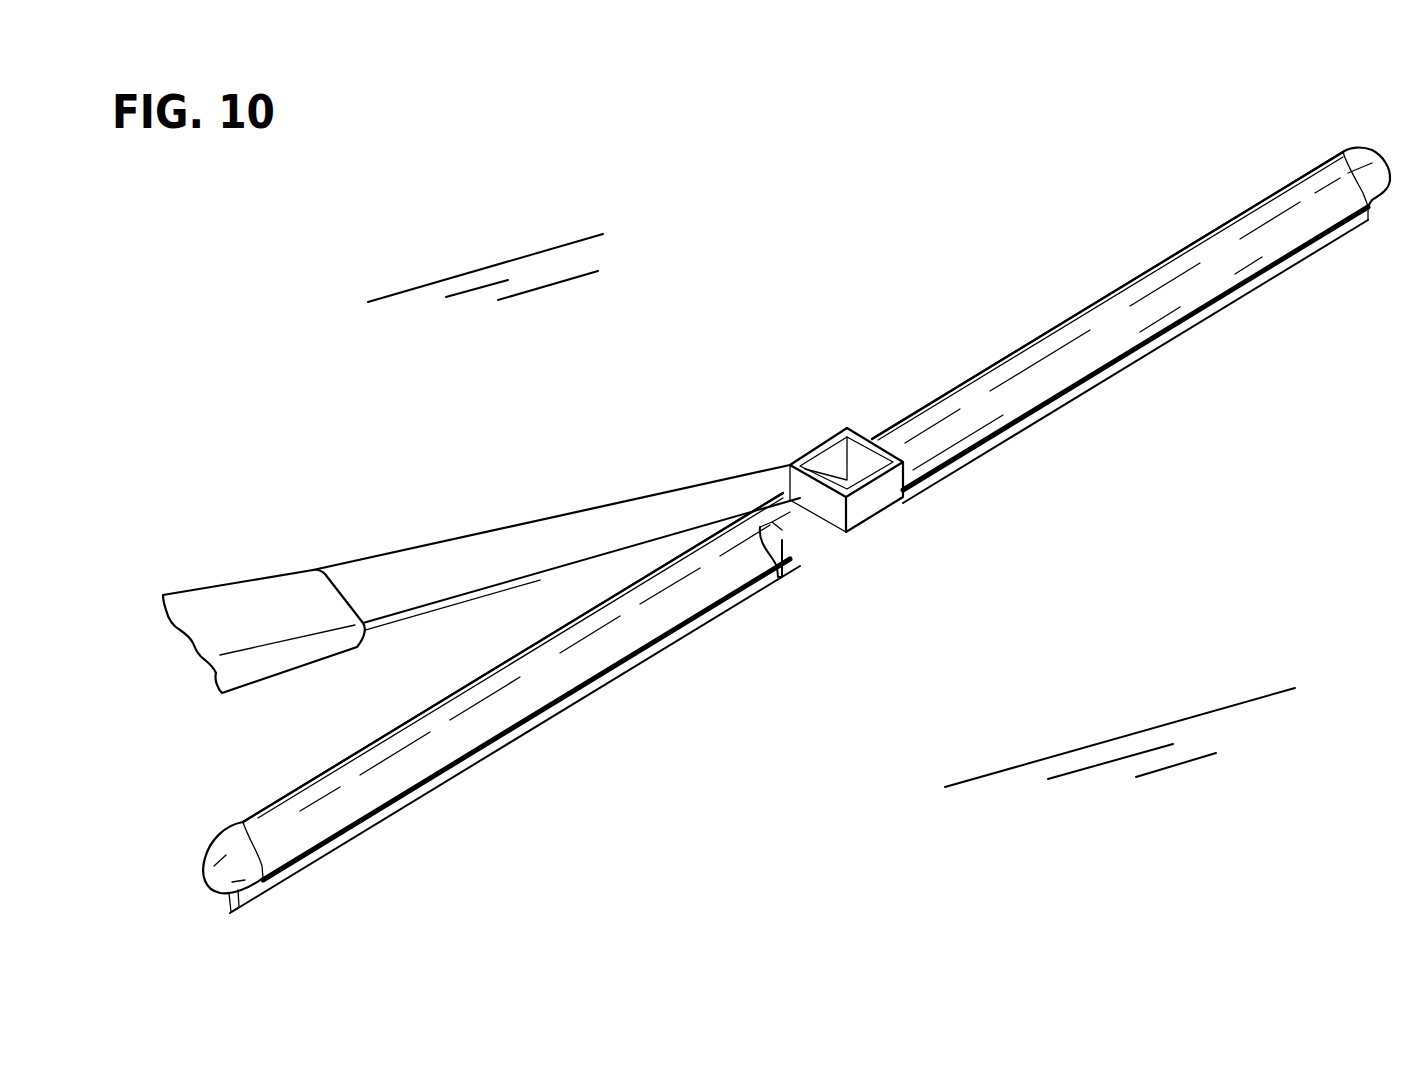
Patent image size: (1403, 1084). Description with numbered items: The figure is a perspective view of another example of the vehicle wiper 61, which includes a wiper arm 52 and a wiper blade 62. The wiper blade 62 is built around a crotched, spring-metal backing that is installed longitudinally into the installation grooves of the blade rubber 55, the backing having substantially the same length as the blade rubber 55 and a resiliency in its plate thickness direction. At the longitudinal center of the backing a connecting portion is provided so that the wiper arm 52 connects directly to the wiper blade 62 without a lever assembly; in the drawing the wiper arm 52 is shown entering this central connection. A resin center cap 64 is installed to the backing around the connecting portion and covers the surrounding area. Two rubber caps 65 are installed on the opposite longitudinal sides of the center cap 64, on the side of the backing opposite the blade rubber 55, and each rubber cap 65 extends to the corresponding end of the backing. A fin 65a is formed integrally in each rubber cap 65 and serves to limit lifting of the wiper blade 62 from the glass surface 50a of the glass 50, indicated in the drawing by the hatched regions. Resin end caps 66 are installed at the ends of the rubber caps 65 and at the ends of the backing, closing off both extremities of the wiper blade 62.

The glass 50 is at (750, 242).
The glass surface 50a is at (1125, 562).
The wiper arm 52 is at (390, 575).
The blade rubber 55 is at (230, 905).
The vehicle wiper 61 is at (575, 427).
The wiper blade 62 is at (860, 428).
The center cap 64 is at (870, 512).
The rubber cap 65 is at (1165, 262).
The fin 65a is at (1100, 306).
The end cap 66 is at (1345, 150).